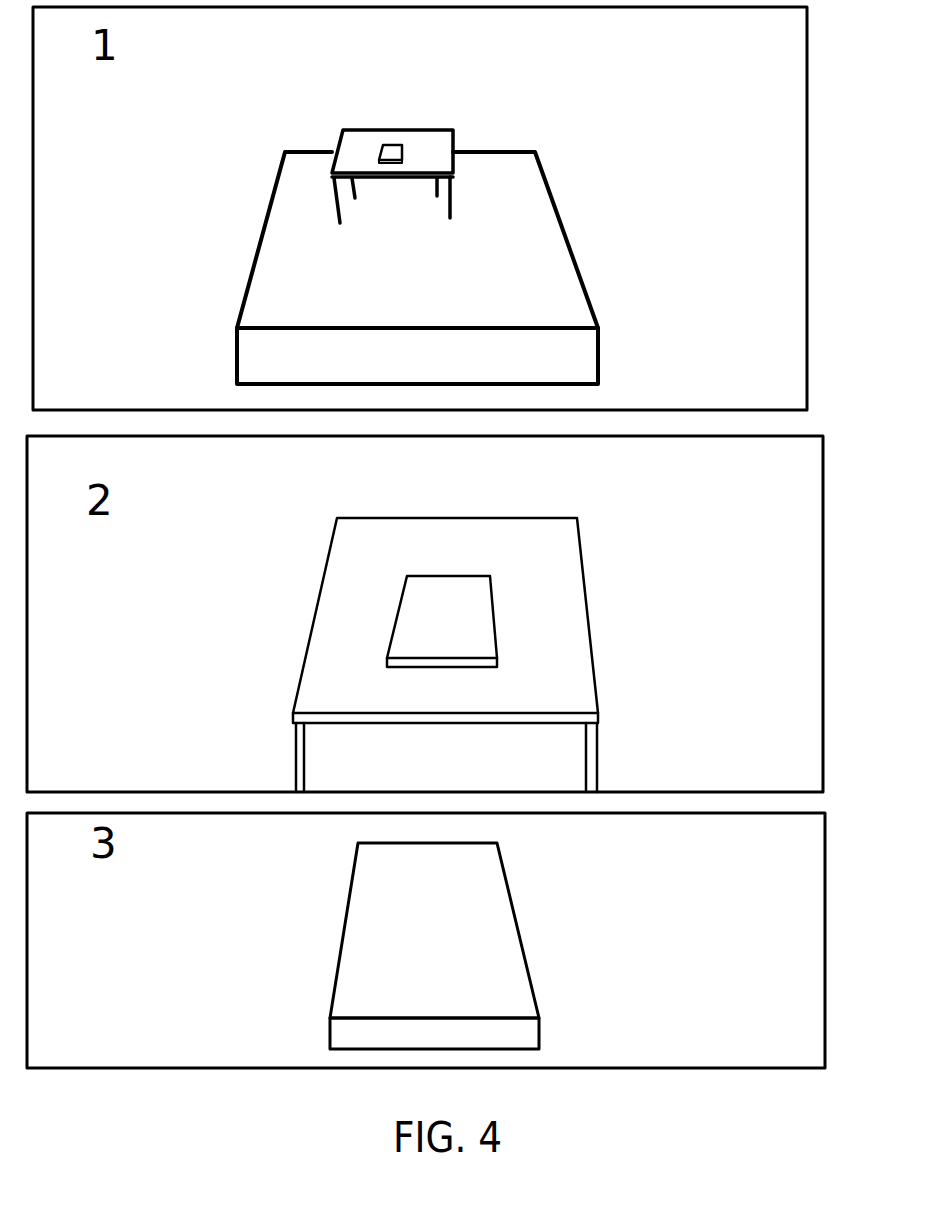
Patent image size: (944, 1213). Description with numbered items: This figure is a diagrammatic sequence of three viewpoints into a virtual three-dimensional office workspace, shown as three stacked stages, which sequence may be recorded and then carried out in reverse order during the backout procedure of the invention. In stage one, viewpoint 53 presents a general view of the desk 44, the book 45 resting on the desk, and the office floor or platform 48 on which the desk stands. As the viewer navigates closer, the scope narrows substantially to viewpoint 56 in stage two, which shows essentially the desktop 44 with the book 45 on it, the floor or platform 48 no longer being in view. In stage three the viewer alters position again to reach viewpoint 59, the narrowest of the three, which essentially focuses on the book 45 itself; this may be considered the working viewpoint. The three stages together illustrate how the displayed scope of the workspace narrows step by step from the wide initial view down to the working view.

The desk 44 is at (433, 147).
The book 45 is at (393, 150).
The office floor or platform 48 is at (532, 247).
The viewpoint 53 is at (807, 150).
The viewpoint 56 is at (823, 608).
The viewpoint 59 is at (825, 935).